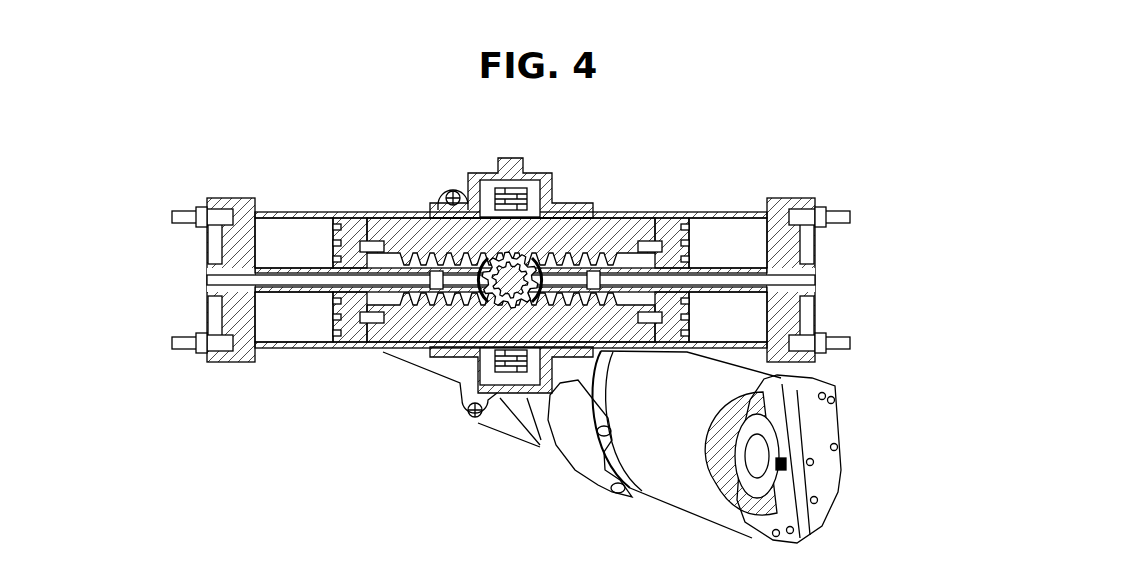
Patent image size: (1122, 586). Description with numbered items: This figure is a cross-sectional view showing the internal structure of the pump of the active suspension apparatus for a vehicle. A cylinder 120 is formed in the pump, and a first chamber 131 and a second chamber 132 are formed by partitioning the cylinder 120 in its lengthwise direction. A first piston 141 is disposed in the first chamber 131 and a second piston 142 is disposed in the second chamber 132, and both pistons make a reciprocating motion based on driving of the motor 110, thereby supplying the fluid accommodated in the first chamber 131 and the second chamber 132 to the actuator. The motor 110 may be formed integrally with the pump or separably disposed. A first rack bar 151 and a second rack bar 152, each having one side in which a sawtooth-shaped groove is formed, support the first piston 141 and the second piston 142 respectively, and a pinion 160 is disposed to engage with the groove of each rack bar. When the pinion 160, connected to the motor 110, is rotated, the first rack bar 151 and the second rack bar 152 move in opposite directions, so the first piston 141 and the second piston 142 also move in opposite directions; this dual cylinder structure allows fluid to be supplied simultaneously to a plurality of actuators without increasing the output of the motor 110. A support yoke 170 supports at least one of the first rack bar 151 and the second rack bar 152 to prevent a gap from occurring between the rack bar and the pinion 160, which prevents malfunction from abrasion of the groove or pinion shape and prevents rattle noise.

The motor 110 is at (670, 477).
The cylinder 120 is at (305, 212).
The first chamber 131 is at (277, 227).
The second chamber 132 is at (285, 332).
The first piston 141 is at (345, 212).
The second piston 142 is at (350, 348).
The first rack bar 151 is at (595, 232).
The second rack bar 152 is at (420, 352).
The pinion 160 is at (466, 200).
The support yoke 170 is at (510, 172).